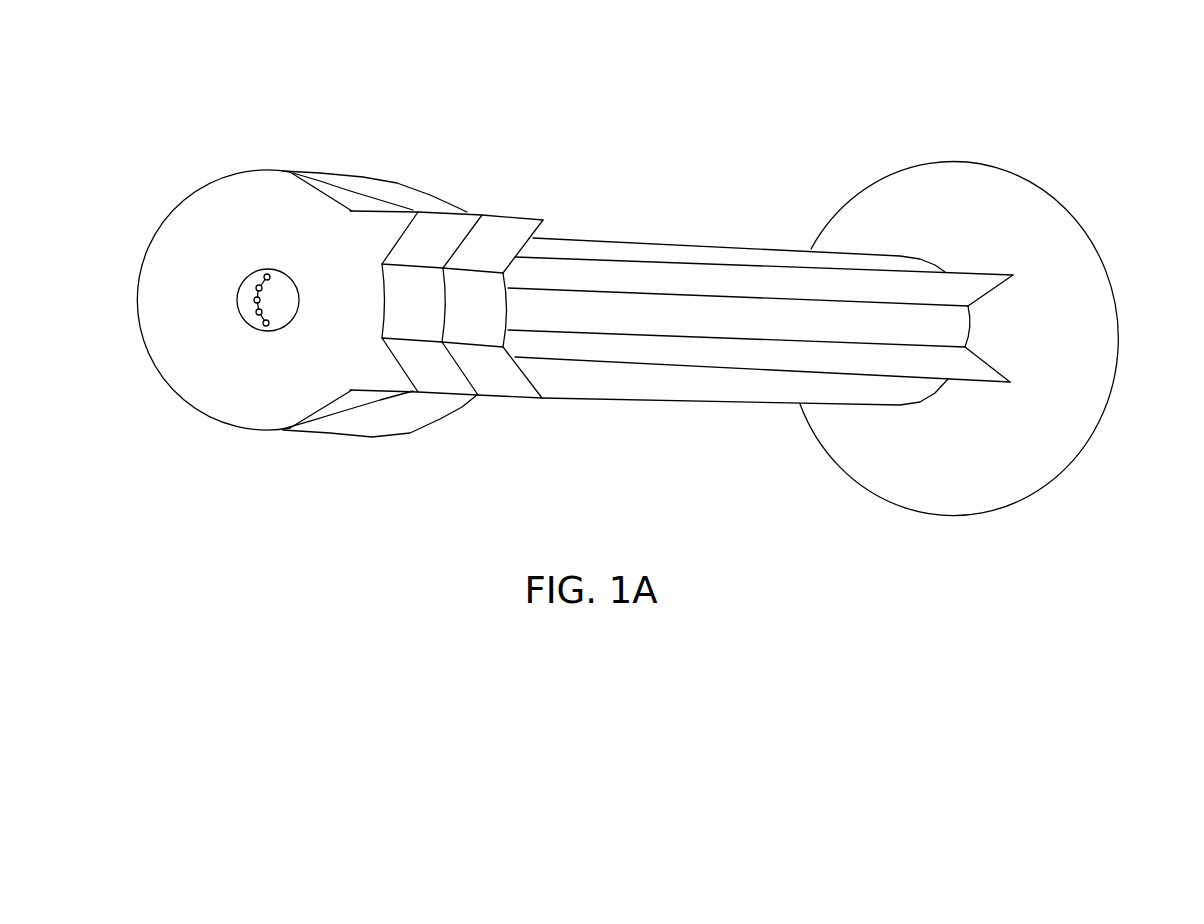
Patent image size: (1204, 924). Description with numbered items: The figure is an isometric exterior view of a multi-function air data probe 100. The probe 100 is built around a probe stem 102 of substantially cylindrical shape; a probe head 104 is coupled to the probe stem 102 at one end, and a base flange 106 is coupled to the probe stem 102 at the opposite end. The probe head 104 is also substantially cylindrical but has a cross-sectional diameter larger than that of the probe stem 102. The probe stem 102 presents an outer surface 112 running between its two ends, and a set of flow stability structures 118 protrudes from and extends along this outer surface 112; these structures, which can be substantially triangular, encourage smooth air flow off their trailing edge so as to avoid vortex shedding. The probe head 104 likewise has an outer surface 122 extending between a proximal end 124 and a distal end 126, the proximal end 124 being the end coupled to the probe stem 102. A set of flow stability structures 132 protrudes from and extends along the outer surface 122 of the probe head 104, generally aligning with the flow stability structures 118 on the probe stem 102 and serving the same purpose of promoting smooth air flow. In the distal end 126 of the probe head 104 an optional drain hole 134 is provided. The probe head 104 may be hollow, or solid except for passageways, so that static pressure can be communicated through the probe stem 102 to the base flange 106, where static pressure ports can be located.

The multi-function air data probe 100 is at (672, 105).
The probe stem 102 is at (690, 401).
The probe head 104 is at (345, 174).
The base flange 106 is at (1093, 283).
The outer surface 112 is at (633, 307).
The flow stability structures 118 is at (750, 270).
The outer surface 122 is at (367, 430).
The proximal end 124 is at (453, 197).
The distal end 126 is at (243, 420).
The flow stability structures 132 is at (520, 218).
The drain hole 134 is at (278, 283).